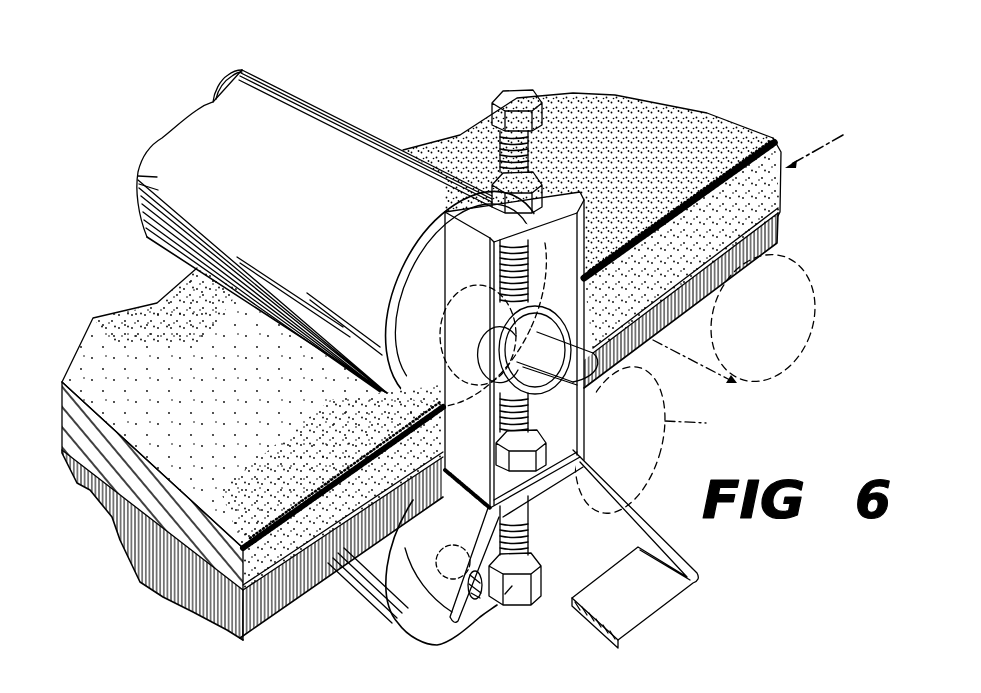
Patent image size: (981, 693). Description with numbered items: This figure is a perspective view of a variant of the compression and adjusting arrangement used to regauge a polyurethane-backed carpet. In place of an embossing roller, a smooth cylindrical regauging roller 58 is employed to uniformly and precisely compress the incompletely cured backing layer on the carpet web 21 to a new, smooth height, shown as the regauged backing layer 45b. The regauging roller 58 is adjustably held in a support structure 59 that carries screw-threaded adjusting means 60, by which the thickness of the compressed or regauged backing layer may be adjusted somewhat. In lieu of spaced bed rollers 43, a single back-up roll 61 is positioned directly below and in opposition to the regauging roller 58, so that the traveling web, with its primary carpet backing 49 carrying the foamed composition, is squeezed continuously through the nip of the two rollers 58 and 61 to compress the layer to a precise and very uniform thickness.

The carpet web 21 is at (140, 592).
The bed rollers 43 is at (735, 386).
The regauged backing layer 45b is at (135, 313).
The primary carpet backing 49 is at (782, 212).
The regauging roller 58 is at (303, 117).
The support structure 59 is at (580, 418).
The screw-threaded adjusting means 60 is at (500, 153).
The back-up roll 61 is at (347, 598).